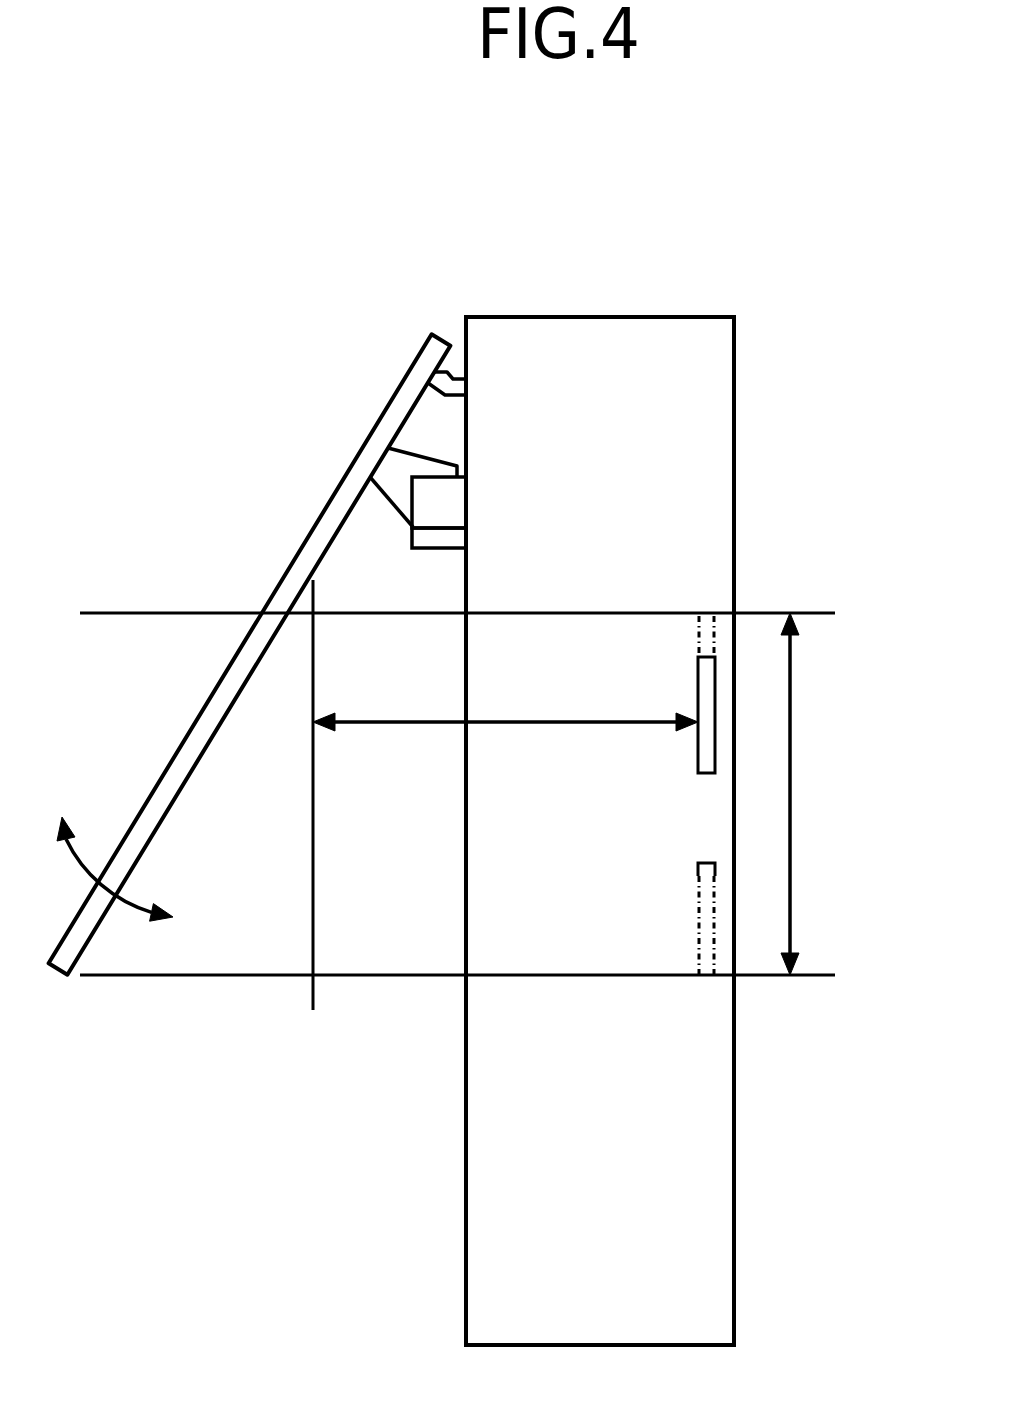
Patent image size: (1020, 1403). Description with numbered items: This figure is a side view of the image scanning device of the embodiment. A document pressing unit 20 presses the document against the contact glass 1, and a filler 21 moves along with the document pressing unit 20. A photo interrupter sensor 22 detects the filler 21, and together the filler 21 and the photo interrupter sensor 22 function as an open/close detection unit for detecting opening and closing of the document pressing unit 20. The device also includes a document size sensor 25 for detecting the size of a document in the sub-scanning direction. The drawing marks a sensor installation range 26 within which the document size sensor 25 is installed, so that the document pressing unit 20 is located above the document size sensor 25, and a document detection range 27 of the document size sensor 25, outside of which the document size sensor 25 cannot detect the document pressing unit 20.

The contact glass 1 is at (720, 1212).
The document pressing unit 20 is at (315, 546).
The filler 21 is at (390, 468).
The photo interrupter sensor 22 is at (452, 505).
The document size sensor 25 is at (705, 692).
The sensor installation range 26 is at (790, 793).
The document detection range 27 is at (582, 722).